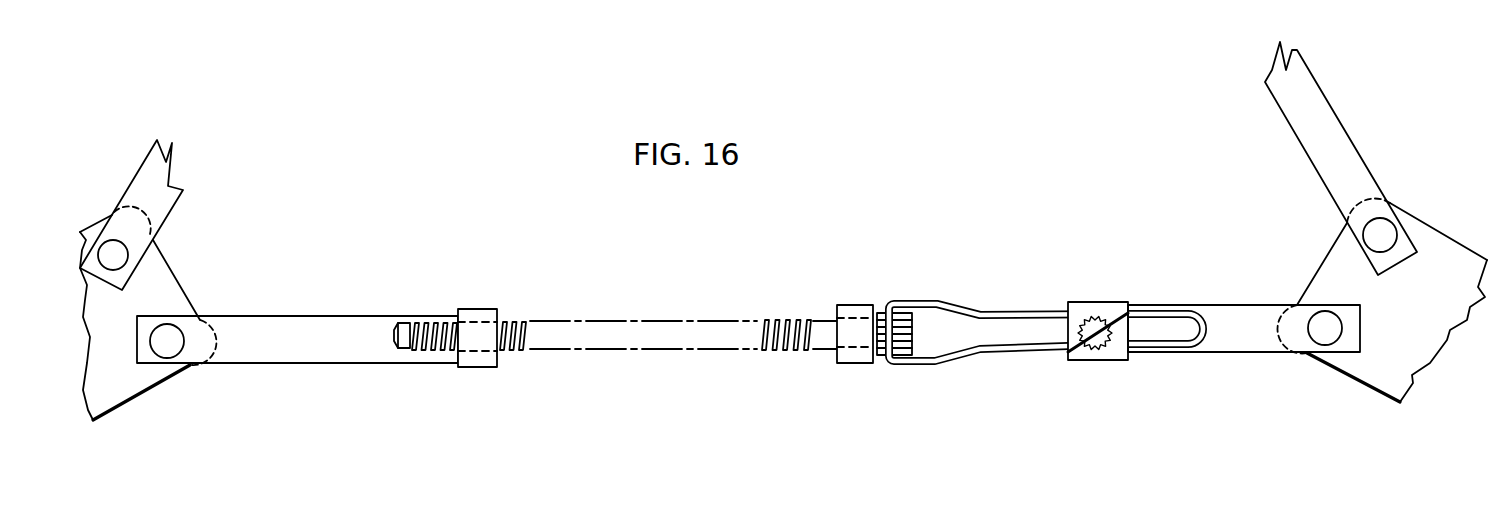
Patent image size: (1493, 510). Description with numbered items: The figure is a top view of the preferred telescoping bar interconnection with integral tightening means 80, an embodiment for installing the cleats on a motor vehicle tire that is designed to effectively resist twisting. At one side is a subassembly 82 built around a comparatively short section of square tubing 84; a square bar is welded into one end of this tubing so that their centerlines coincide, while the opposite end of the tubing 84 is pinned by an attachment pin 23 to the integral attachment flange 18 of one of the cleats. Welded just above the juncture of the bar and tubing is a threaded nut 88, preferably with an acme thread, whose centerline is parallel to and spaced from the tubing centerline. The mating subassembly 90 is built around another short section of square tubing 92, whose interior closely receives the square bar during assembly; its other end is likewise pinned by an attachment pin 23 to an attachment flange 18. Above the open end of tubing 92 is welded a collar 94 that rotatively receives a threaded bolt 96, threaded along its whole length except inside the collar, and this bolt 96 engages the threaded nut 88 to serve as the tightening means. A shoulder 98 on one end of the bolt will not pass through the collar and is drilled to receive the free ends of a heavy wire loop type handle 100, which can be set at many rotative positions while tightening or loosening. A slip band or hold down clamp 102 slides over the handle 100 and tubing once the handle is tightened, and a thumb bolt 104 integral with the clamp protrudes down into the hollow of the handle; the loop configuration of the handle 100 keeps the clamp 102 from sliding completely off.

The integral attachment flange 18 is at (155, 277).
The attachment pin 23 is at (163, 347).
The telescoping bar interconnection with integral tightening means 80 is at (815, 274).
The subassembly 82 is at (340, 315).
The section of square tubing 84 is at (303, 357).
The threaded nut 88 is at (473, 358).
The subassembly 90 is at (1242, 305).
The section of square tubing 92 is at (1220, 342).
The collar 94 is at (860, 310).
The threaded bolt 96 is at (773, 353).
The shoulder 98 is at (897, 323).
The loop type handle 100 is at (957, 313).
The slip band or hold down clamp 102 is at (1108, 348).
The thumb bolt 104 is at (1053, 354).